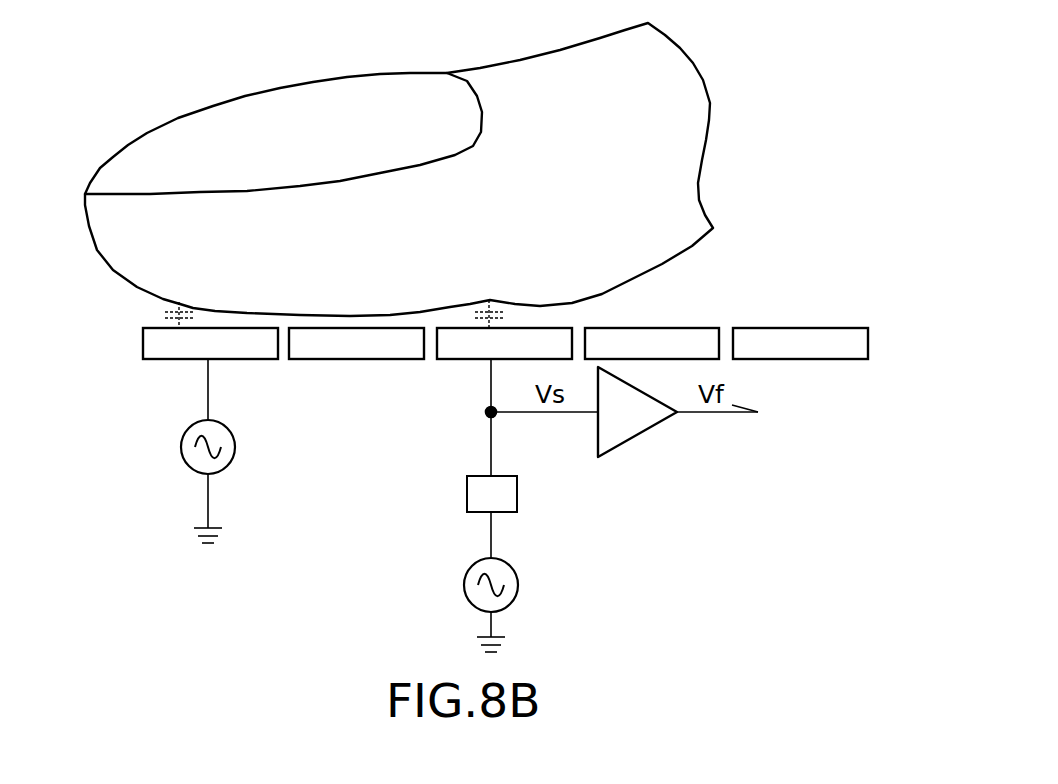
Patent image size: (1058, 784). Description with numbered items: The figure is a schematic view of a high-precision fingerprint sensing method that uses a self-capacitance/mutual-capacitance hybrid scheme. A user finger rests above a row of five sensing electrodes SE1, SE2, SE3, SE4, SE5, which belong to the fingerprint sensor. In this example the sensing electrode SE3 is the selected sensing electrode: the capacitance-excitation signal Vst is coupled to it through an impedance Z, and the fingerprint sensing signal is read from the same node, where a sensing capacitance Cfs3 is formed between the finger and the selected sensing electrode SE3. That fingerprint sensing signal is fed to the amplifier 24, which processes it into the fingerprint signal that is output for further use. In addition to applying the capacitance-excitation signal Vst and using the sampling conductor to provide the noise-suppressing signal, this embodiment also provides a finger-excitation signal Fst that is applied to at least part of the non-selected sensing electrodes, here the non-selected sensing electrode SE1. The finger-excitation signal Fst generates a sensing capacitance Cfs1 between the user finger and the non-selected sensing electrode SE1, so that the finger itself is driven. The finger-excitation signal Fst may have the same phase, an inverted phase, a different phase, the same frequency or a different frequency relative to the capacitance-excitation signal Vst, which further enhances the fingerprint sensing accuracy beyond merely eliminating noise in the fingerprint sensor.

The amplifier 24 is at (628, 428).
The non-selected sensing electrode SE1 is at (210, 343).
The sensing electrode SE2 is at (356, 343).
The selected sensing electrode SE3 is at (504, 343).
The sensing electrode SE4 is at (652, 343).
The sensing electrode SE5 is at (800, 343).
The sensing capacitance Cfs1 is at (153, 313).
The sensing capacitance Cfs3 is at (519, 314).
The finger-excitation signal Fst is at (184, 451).
The capacitance-excitation signal Vst is at (467, 582).
The impedance Z is at (492, 494).